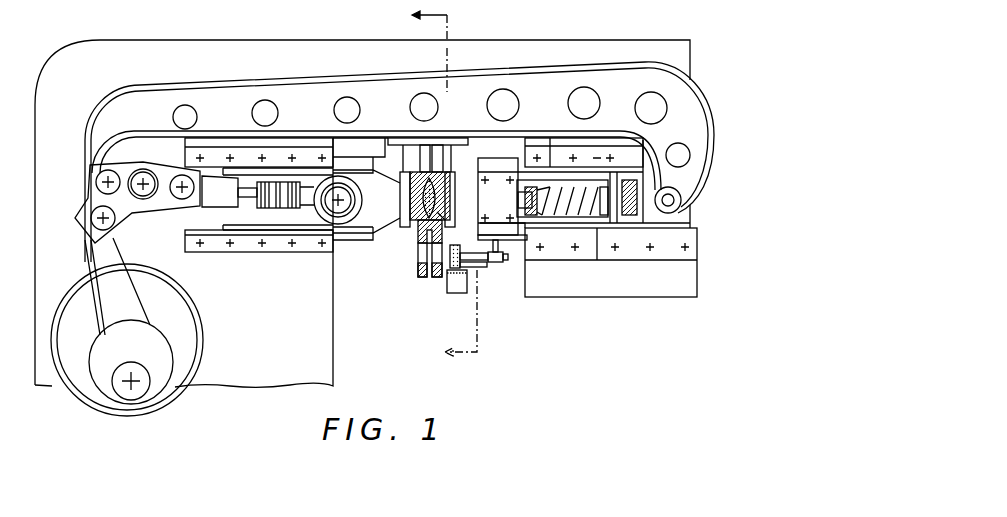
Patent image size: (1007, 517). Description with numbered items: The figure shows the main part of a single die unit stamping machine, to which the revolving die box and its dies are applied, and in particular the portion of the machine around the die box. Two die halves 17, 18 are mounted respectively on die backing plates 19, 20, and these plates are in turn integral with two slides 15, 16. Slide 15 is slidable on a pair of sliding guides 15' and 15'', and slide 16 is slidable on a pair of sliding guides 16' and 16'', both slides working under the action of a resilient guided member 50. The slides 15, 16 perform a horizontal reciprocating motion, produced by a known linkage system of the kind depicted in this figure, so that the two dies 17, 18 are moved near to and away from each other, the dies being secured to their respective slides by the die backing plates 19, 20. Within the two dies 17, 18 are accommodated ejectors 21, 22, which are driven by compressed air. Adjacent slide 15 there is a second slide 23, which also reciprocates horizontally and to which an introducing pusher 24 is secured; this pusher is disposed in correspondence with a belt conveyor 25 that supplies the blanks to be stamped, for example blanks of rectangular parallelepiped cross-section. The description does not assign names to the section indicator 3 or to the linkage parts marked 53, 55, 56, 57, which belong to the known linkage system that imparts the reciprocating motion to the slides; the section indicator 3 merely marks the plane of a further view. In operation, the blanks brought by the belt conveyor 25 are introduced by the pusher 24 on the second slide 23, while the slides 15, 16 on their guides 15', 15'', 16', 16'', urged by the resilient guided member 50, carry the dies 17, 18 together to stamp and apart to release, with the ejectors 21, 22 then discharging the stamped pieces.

The section line 3- 3 is at (431, 185).
The slide 15 is at (498, 187).
The sliding guide 15' is at (588, 260).
The sliding guide 15'' is at (584, 136).
The slide 16 is at (311, 198).
The sliding guide 16' is at (259, 254).
The sliding guide 16'' is at (259, 138).
The die half 17 is at (442, 218).
The die half 18 is at (414, 228).
The die backing plate 19 is at (449, 184).
The die backing plate 20 is at (408, 184).
The ejector 21 is at (446, 202).
The ejector 22 is at (420, 202).
The second slide 23 is at (514, 244).
The introducing pusher 24 is at (478, 266).
The belt conveyor 25 is at (456, 292).
The resilient guided member 50 is at (557, 204).
The coupling 53 is at (218, 192).
The lever 55 is at (144, 192).
The eccentric wheel 56 is at (80, 355).
The crank pin 57 is at (142, 388).